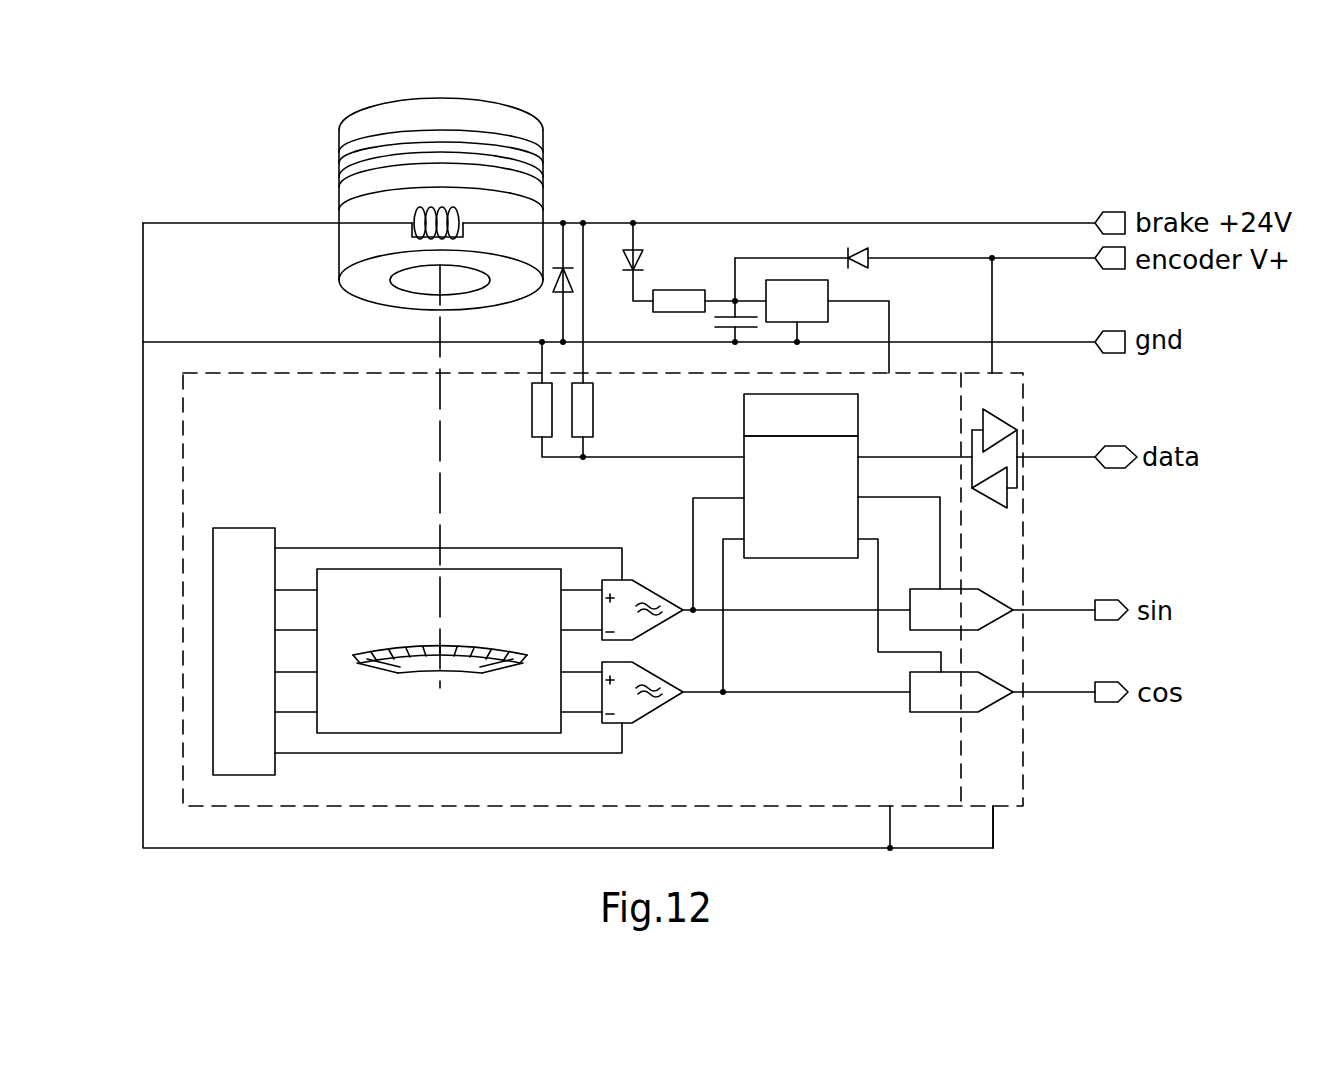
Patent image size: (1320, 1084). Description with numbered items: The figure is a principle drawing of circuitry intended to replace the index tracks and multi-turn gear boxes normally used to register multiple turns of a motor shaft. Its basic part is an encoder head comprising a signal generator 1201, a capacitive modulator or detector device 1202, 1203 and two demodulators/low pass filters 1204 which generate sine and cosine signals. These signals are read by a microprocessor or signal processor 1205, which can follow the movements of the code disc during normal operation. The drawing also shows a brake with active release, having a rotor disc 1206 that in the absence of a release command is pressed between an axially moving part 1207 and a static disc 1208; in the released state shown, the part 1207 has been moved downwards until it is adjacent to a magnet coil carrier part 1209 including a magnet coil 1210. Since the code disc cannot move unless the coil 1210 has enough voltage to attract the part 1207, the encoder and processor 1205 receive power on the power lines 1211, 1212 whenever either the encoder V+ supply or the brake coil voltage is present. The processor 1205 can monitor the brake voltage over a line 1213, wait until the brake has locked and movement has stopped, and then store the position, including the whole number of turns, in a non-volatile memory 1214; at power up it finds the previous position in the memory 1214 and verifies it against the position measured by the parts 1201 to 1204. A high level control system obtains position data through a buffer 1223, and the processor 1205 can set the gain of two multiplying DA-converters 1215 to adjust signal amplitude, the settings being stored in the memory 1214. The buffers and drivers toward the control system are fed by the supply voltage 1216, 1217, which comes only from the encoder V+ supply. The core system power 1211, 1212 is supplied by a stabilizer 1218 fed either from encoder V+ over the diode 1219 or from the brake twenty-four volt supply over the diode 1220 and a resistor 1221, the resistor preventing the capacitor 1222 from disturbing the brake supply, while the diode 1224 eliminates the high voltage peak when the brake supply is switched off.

The signal generator 1201 is at (193, 565).
The capacitive modulator or detector device 1202 is at (502, 568).
The capacitive modulator or detector device 1203 is at (422, 650).
The demodulators/low pass filters 1204 is at (648, 717).
The microprocessor or signal processor 1205 is at (786, 556).
The rotor disc 1206 is at (339, 170).
The axially moving part 1207 is at (339, 199).
The static disc 1208 is at (339, 130).
The magnet coil carrier part 1209 is at (339, 228).
The magnet coil 1210 is at (470, 207).
The power line 1211 is at (897, 812).
The power line 1212 is at (896, 343).
The line 1213 is at (538, 447).
The non-volatile memory 1214 is at (867, 398).
The multiplying DA-converter 1215 is at (988, 690).
The supply voltage 1216 is at (1003, 812).
The supply voltage 1217 is at (998, 343).
The stabilizer 1218 is at (805, 279).
The diode 1219 is at (863, 244).
The diode 1220 is at (650, 253).
The resistor 1221 is at (680, 283).
The capacitor 1222 is at (727, 338).
The buffer 1223 is at (1007, 507).
The diode 1224 is at (553, 291).